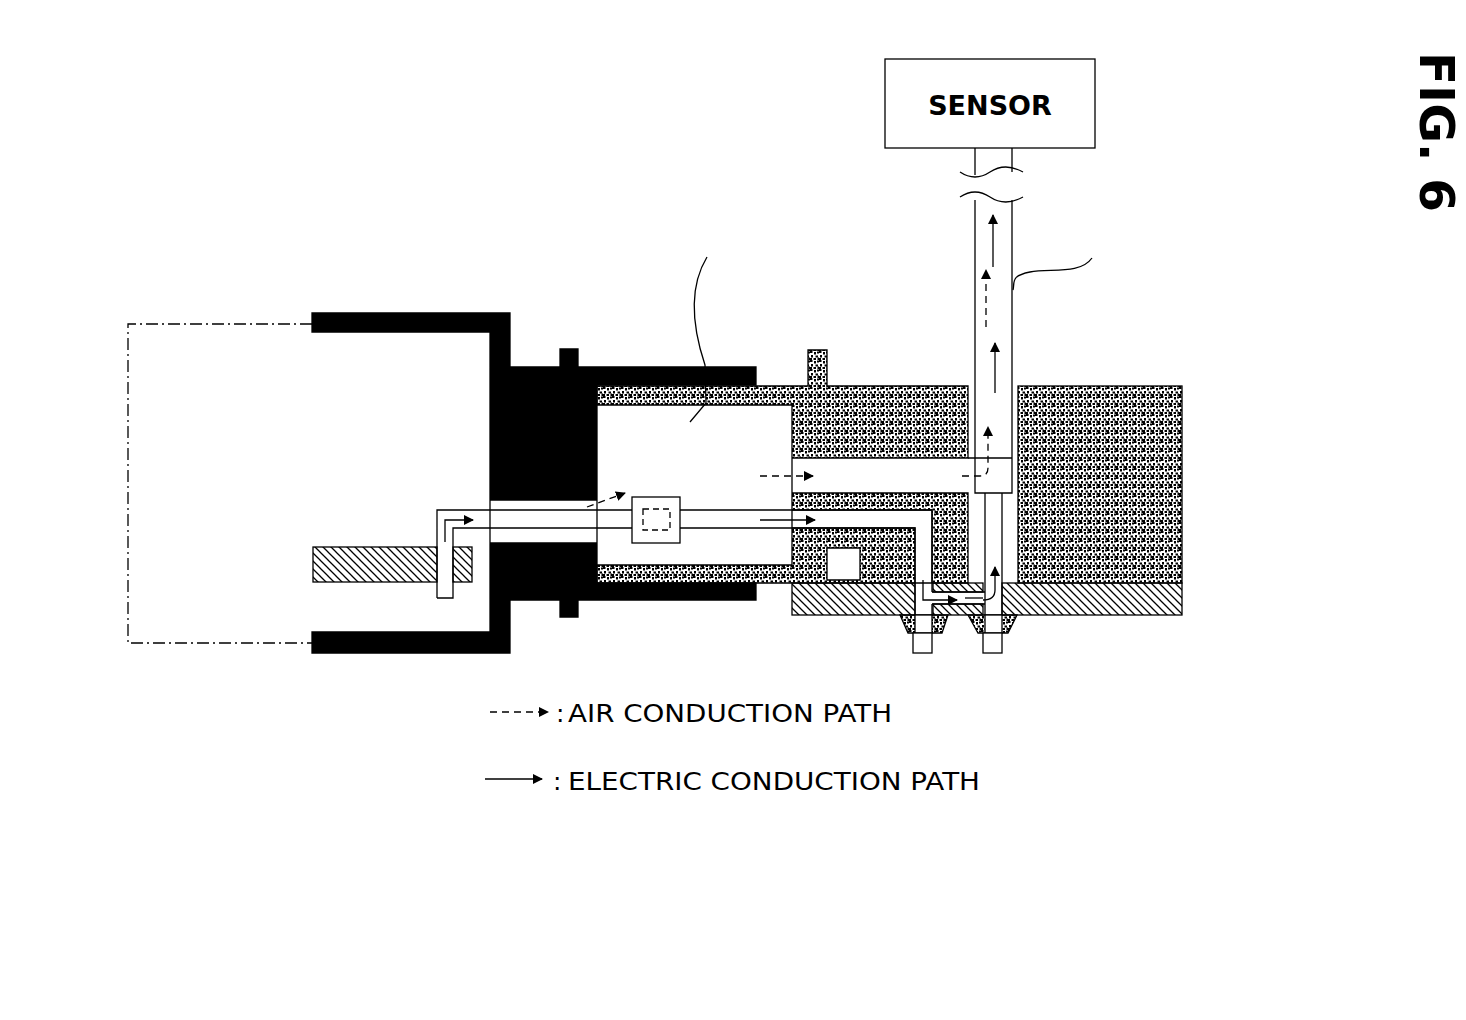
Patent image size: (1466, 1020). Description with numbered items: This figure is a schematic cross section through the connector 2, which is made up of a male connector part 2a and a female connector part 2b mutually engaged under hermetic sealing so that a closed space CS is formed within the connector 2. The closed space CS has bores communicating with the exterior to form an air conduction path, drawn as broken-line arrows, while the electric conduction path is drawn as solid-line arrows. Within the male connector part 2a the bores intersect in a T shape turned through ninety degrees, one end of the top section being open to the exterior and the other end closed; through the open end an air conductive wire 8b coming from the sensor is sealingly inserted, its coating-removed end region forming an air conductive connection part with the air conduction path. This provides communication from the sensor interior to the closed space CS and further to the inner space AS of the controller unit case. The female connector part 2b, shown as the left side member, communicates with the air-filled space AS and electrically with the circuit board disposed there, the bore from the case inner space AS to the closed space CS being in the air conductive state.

The connector 2 is at (747, 460).
The male connector part 2a is at (878, 386).
The female connector part 2b is at (602, 365).
The air conductive wire 8b is at (1013, 386).
The air-filled space AS is at (473, 497).
The closed space CS is at (656, 363).